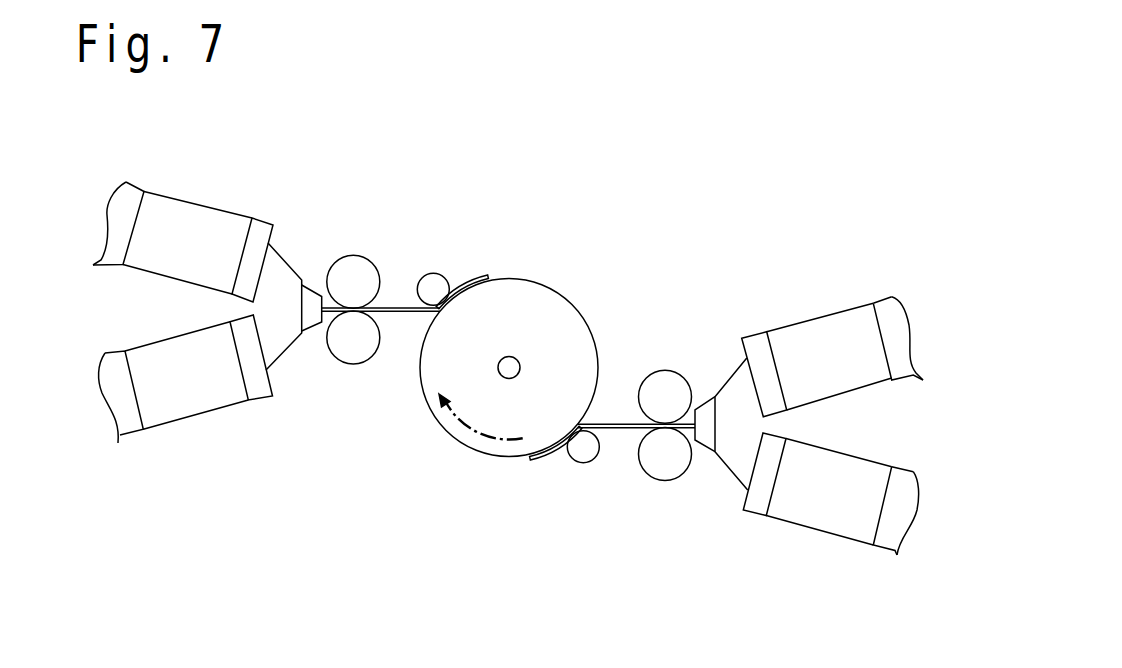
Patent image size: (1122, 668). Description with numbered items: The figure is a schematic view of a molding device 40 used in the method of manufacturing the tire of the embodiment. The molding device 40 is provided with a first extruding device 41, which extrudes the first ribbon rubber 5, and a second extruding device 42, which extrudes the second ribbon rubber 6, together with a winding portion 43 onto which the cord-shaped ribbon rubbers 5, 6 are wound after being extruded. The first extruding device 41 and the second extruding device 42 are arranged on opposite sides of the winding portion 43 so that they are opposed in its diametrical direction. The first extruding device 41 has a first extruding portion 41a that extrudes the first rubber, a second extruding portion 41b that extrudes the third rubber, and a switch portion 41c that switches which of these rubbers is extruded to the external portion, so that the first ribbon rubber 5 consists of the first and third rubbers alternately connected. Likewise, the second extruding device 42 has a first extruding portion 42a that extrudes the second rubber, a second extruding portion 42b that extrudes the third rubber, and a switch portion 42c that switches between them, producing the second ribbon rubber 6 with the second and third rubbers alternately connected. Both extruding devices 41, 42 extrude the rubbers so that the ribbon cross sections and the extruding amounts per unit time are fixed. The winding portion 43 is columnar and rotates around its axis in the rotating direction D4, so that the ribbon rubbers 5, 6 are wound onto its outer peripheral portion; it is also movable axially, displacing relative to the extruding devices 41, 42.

The molding device 40 is at (838, 150).
The first extruding device 41 is at (273, 187).
The first extruding portion 41a is at (223, 210).
The second extruding portion 41b is at (215, 409).
The switch portion 41c is at (287, 262).
The second extruding device 42 is at (727, 306).
The first extruding portion 42a is at (800, 327).
The second extruding portion 42b is at (800, 523).
The switch portion 42c is at (727, 470).
The winding portion 43 is at (547, 284).
The first ribbon rubber 5 is at (398, 312).
The second ribbon rubber 6 is at (610, 422).
The rotating direction D4 is at (481, 417).